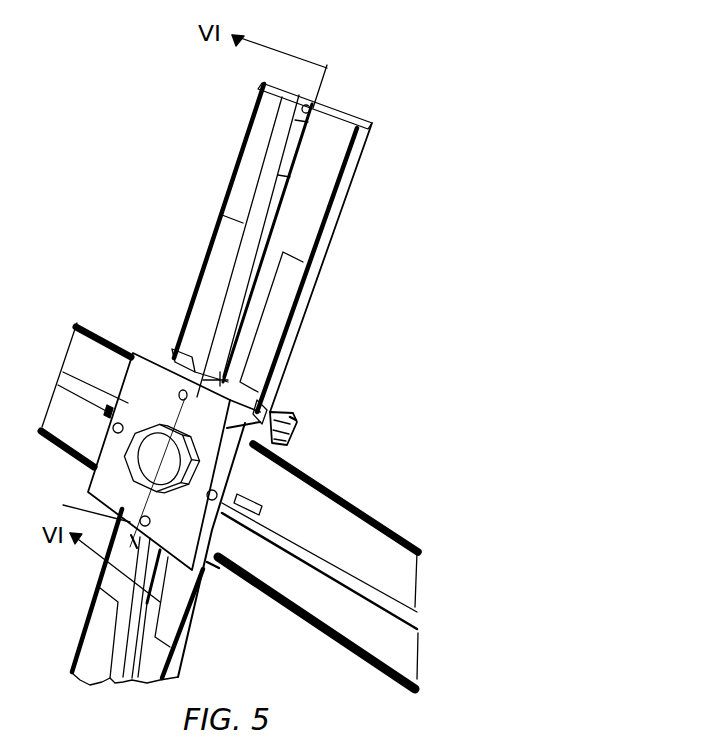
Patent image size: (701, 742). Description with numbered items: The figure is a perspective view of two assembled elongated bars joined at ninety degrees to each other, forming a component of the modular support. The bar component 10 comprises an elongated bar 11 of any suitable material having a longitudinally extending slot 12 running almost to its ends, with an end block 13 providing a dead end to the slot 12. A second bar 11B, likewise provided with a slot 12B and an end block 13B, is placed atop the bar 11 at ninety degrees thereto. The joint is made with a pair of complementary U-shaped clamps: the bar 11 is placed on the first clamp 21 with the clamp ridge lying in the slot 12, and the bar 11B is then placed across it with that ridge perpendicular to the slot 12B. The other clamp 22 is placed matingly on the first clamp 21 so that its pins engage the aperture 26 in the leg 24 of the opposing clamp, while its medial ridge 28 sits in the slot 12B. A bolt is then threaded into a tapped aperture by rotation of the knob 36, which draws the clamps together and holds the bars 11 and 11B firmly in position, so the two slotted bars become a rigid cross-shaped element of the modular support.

The bar component 10 is at (400, 132).
The elongated bar 11 is at (303, 307).
The longitudinally extending slot 12 is at (273, 236).
The end block 13 is at (303, 111).
The end block 13B is at (63, 383).
The U-shaped clamp 21 is at (280, 434).
The clamp 22 is at (282, 415).
The leg 24 is at (291, 418).
The aperture 26 is at (183, 393).
The medial ridge 28 is at (242, 497).
The knob 36 is at (107, 462).
The bar 11B is at (327, 481).
The slot 12B is at (307, 547).